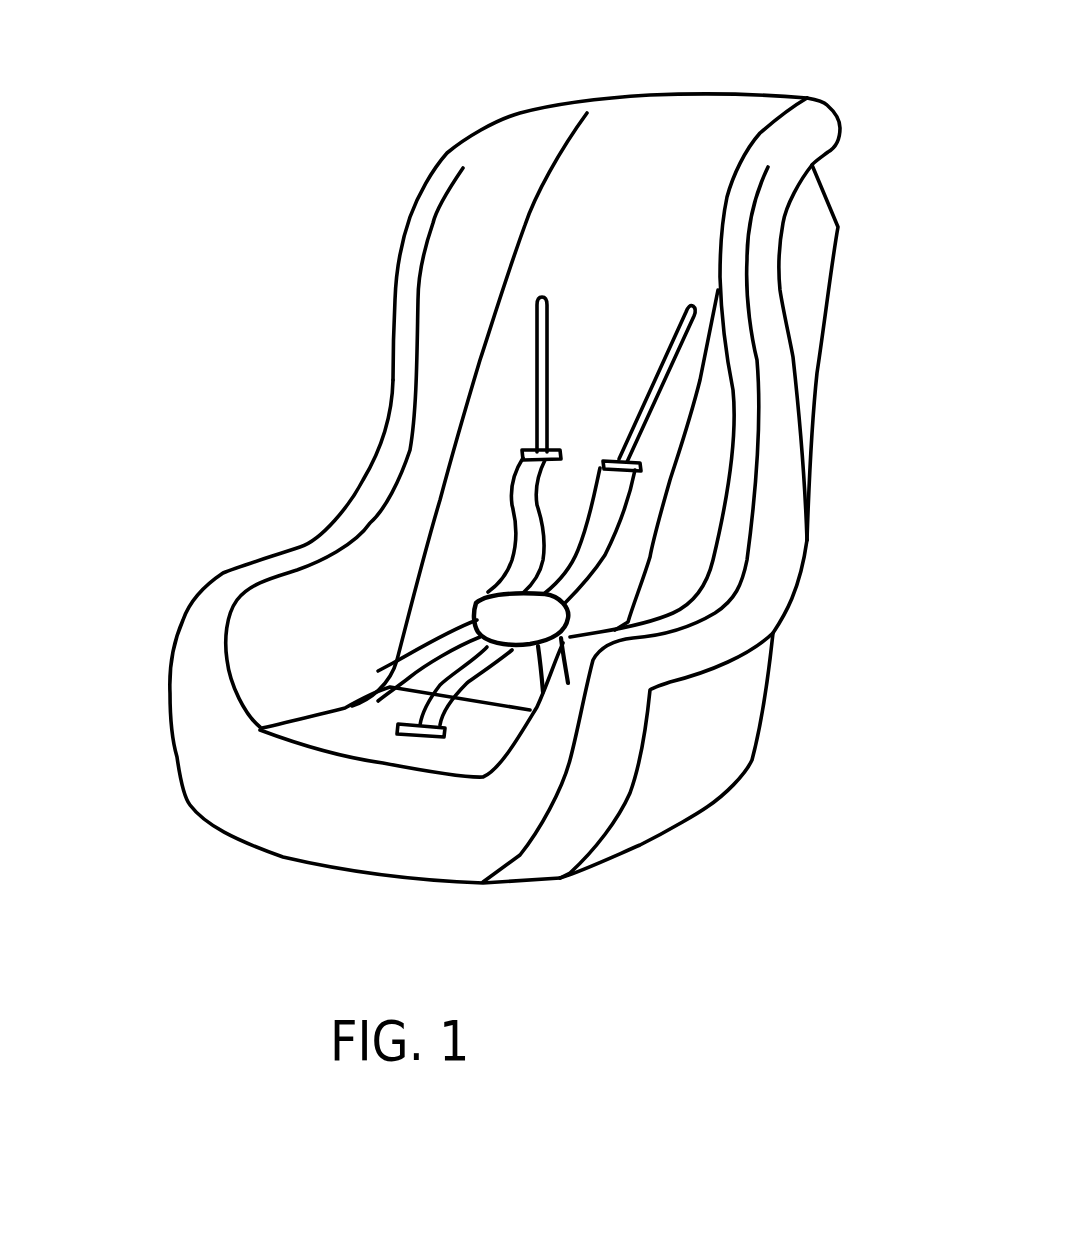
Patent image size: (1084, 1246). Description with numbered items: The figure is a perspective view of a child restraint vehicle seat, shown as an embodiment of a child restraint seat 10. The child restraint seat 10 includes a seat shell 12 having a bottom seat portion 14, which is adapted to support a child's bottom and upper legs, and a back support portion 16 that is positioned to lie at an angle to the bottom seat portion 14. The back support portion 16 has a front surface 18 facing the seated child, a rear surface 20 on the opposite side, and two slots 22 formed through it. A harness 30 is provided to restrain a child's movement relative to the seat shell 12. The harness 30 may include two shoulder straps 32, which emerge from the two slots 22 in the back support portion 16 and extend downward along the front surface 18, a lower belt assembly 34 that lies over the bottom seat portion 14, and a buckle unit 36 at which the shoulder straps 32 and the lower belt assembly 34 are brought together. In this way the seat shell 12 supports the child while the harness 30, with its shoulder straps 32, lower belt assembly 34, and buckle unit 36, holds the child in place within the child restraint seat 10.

The child restraint seat 10 is at (503, 472).
The seat shell 12 is at (568, 472).
The bottom seat portion 14 is at (323, 730).
The back support portion 16 is at (770, 318).
The front surface 18 is at (607, 138).
The rear surface 20 is at (838, 165).
The slots 22 is at (549, 340).
The harness 30 is at (536, 517).
The shoulder straps 32 is at (510, 470).
The lower belt assembly 34 is at (434, 634).
The buckle unit 36 is at (487, 596).